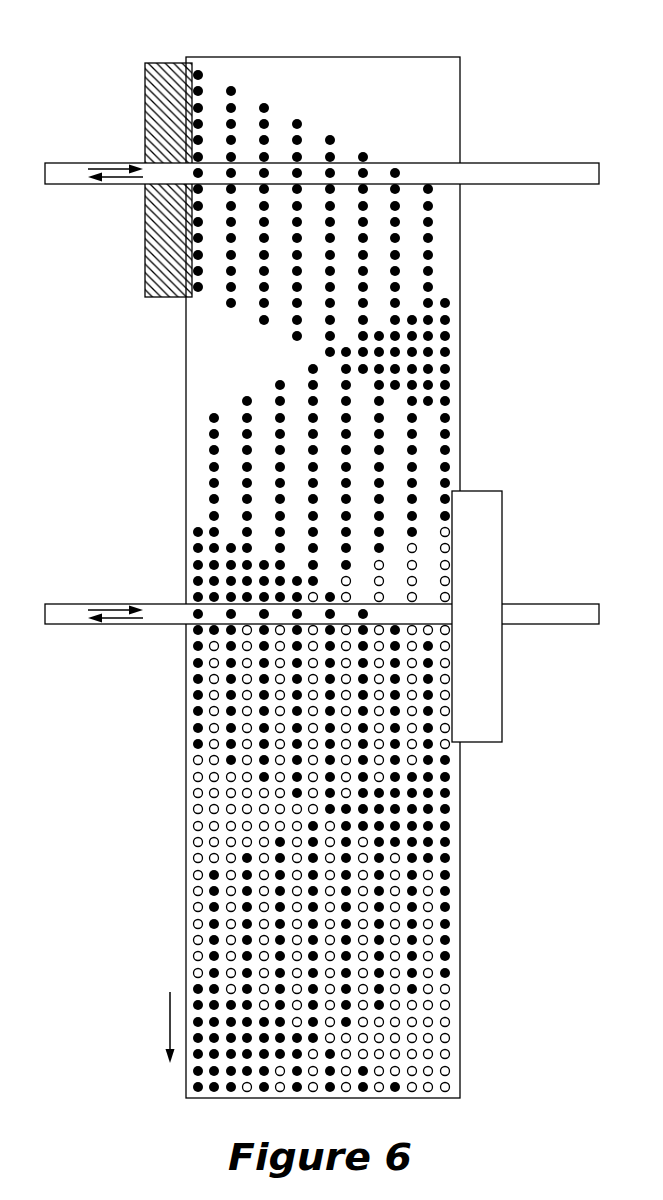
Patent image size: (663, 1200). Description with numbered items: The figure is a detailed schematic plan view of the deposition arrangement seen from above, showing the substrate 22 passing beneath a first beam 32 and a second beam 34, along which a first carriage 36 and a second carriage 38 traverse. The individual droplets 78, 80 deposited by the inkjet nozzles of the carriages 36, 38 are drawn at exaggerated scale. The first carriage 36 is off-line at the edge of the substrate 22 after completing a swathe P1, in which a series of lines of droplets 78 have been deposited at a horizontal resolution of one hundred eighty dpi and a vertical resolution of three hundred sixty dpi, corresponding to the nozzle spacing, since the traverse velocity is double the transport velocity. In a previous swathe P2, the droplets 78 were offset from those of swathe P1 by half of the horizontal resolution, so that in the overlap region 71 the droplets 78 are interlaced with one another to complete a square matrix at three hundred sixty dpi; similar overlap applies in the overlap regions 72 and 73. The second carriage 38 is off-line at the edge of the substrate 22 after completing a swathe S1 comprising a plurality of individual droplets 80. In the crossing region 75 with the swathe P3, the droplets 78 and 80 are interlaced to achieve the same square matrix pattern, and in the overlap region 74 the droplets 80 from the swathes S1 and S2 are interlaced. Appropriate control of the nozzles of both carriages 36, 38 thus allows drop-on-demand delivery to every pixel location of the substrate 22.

The substrate 22 is at (460, 82).
The first carriage 36 is at (145, 98).
The first beam 32 is at (68, 162).
The second beam 34 is at (72, 604).
The second carriage 38 is at (503, 534).
The swathe P1 is at (280, 136).
The droplets 78 is at (430, 237).
The overlap region 71 is at (437, 362).
The swathe P2 is at (447, 448).
The overlap region 72 is at (205, 575).
The swathe P3 is at (218, 660).
The crossing region 75 is at (305, 707).
The overlap region 74 is at (205, 785).
The droplets 80 is at (195, 808).
The swathe S1 is at (420, 733).
The overlap region 73 is at (440, 800).
The swathe S2 is at (420, 900).